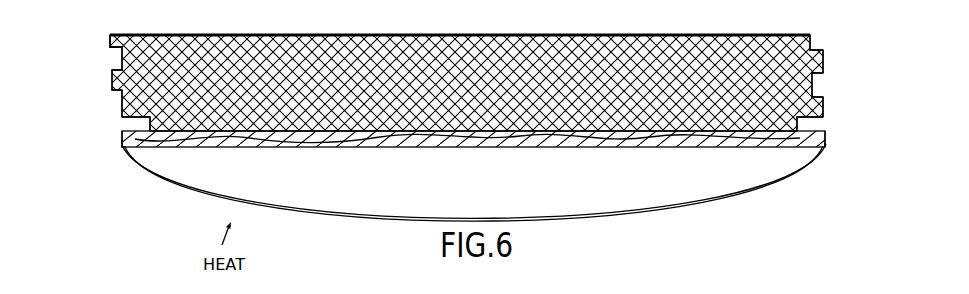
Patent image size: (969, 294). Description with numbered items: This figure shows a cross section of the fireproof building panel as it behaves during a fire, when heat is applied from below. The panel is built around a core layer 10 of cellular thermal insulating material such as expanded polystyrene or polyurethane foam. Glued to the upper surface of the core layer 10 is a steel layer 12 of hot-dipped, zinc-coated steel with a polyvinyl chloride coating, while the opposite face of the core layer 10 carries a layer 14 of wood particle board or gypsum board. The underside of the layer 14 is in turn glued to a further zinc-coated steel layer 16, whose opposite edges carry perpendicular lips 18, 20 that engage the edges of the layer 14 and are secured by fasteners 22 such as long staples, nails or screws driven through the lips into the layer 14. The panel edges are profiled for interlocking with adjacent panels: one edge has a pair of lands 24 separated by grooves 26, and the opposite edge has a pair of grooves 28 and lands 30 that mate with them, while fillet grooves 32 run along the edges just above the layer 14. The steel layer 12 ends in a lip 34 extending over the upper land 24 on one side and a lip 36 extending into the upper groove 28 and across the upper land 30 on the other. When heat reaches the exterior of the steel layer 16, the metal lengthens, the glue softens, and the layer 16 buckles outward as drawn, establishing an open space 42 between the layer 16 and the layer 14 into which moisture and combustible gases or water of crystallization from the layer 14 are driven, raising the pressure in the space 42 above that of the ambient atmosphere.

The core layer 10 is at (438, 35).
The steel layer 12 is at (607, 35).
The wood particle board or gypsum board layer 14 is at (625, 148).
The steel layer 16 is at (687, 208).
The lip 18 is at (122, 141).
The lip 20 is at (827, 145).
The fasteners 22 is at (122, 131).
The lands 24 is at (110, 43).
The grooves 26 is at (114, 57).
The grooves 28 is at (817, 39).
The lands 30 is at (823, 62).
The fillet grooves 32 is at (135, 126).
The lip 34 is at (108, 34).
The lip 36 is at (817, 34).
The open space 42 is at (478, 196).